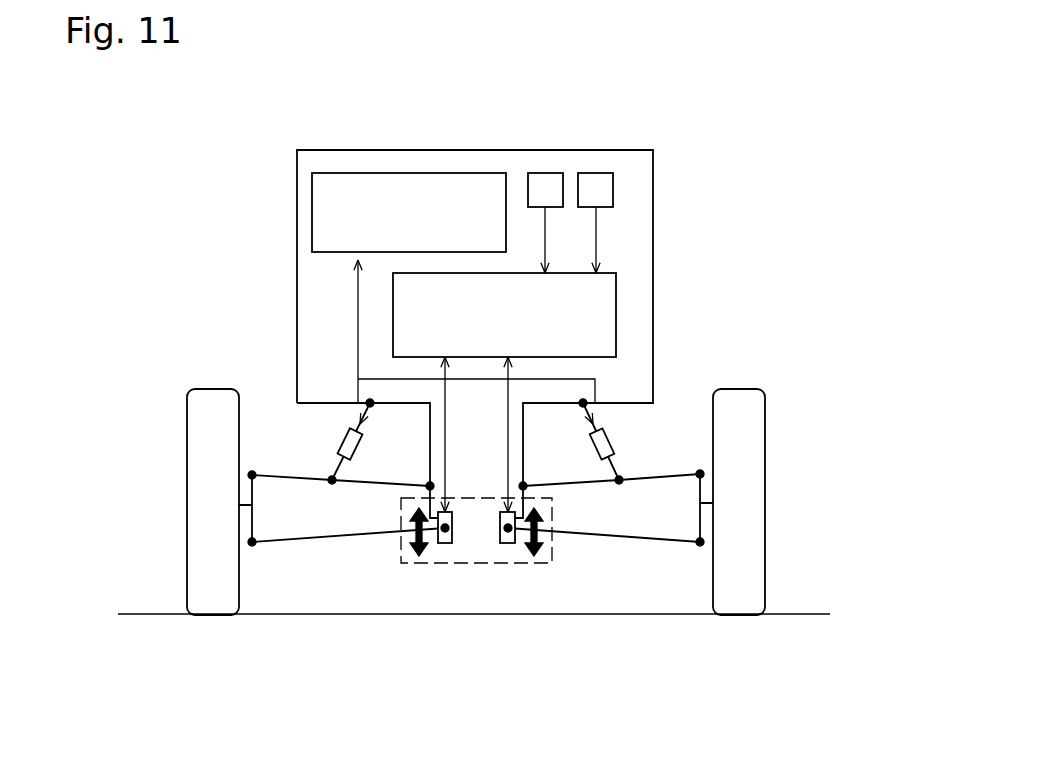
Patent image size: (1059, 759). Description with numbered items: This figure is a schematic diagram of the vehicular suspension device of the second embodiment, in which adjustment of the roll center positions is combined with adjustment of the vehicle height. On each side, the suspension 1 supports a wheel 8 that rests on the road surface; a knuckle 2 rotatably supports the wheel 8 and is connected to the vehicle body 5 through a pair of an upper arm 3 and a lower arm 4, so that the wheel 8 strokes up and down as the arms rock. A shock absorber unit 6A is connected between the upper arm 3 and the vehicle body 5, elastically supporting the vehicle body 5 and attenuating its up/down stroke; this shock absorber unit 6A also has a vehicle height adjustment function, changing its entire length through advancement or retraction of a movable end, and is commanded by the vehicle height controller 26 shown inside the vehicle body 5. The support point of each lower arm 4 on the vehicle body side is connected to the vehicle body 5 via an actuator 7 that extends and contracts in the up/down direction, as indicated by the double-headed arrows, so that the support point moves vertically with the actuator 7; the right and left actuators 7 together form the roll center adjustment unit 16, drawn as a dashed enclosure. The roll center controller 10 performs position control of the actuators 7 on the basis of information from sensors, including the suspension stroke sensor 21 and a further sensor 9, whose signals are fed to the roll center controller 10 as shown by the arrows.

The suspension 1 is at (287, 558).
The knuckle 2 is at (243, 529).
The upper arm 3 is at (653, 466).
The lower arm 4 is at (684, 529).
The vehicle body 5 is at (286, 243).
The shock absorber unit 6A is at (334, 440).
The actuator 7 is at (465, 546).
The wheel 8 is at (177, 593).
The sensor 9 is at (537, 164).
The roll center controller 10 is at (625, 285).
The roll center adjustment unit 16 is at (438, 565).
The suspension stroke sensor 21 is at (595, 161).
The vehicle height controller 26 is at (359, 164).